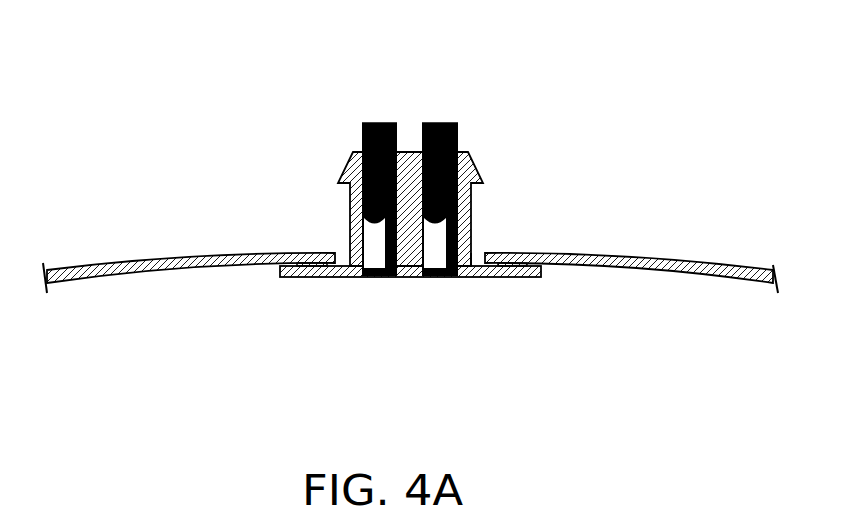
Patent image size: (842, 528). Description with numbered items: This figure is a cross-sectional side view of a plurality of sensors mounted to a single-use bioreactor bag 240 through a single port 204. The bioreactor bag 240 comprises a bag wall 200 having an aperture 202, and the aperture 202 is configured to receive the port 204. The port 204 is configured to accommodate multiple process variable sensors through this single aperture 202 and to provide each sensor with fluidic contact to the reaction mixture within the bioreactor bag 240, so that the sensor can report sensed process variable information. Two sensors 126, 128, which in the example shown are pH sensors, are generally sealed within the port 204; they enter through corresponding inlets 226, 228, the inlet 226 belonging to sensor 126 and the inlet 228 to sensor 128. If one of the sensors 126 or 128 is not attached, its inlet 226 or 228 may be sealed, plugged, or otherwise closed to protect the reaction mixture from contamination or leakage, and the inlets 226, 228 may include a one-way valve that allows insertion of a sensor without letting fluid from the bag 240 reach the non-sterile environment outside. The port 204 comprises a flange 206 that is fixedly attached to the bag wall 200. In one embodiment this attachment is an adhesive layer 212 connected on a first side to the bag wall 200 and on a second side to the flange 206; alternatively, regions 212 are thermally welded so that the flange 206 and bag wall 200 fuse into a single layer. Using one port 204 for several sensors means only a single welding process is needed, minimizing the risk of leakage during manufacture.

The sensor 126 is at (358, 133).
The sensor 128 is at (458, 132).
The inlet 226 is at (373, 110).
The inlet 228 is at (439, 110).
The port 204 is at (478, 167).
The aperture 202 is at (479, 253).
The flange 206 is at (487, 278).
The adhesive layer 212 is at (530, 265).
The bag wall 200 is at (587, 250).
The single-use bioreactor bag 240 is at (242, 203).